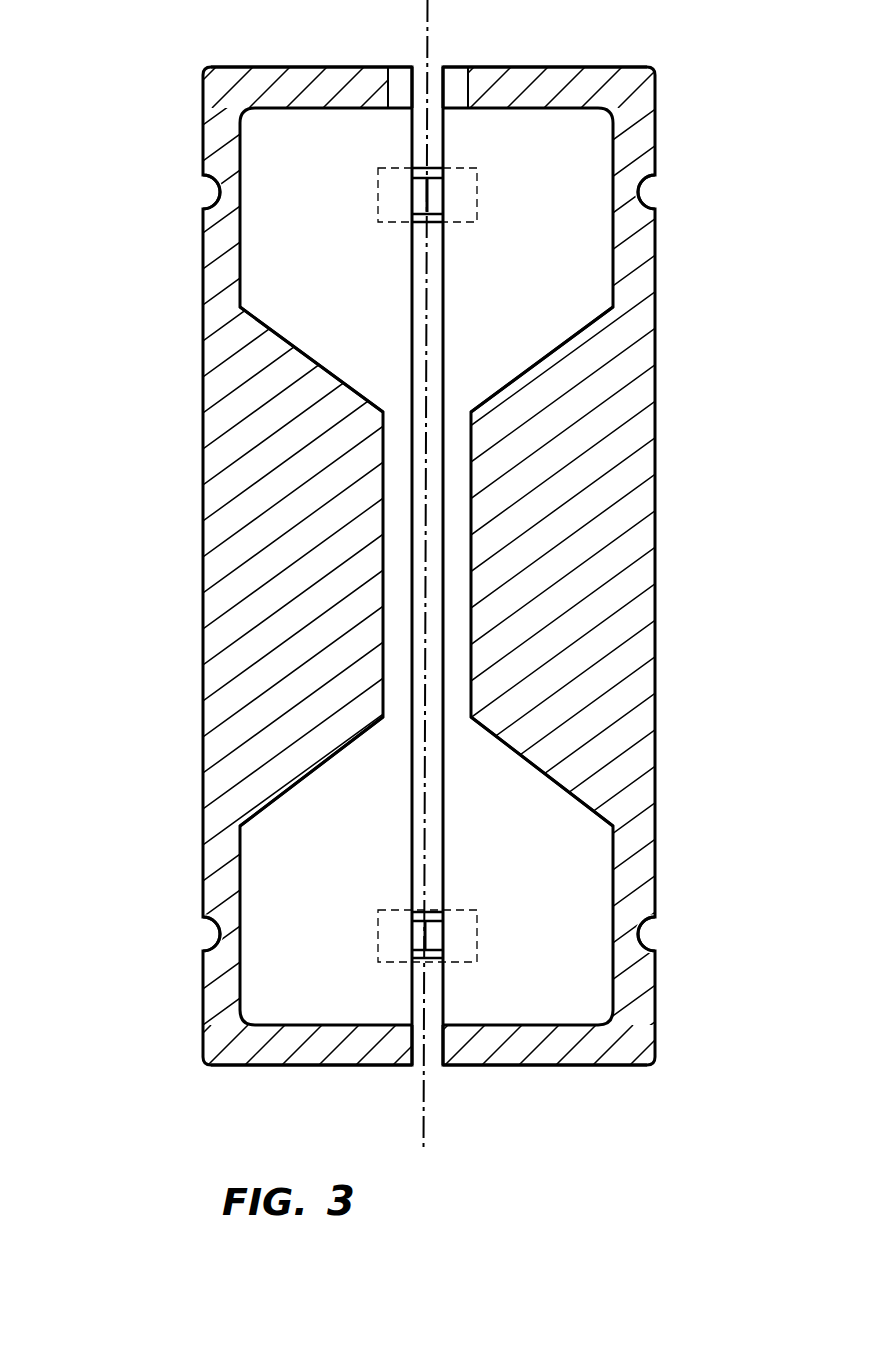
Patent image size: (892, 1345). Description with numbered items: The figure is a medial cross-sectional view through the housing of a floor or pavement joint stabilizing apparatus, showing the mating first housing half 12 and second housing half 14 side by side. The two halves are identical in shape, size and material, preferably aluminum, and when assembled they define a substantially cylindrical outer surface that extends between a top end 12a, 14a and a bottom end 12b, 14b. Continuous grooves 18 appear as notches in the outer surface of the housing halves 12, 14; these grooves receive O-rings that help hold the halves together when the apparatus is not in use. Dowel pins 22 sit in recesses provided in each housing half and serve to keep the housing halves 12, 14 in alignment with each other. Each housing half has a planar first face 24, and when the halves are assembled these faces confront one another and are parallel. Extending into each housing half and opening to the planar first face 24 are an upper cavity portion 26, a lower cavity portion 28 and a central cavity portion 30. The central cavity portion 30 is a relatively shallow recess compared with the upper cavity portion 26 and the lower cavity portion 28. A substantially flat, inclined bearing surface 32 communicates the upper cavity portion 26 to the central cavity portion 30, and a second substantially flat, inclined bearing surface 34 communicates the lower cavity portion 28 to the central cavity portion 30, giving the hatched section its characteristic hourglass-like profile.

The first housing half 12 is at (640, 565).
The top end of first housing half 12a is at (575, 67).
The bottom end of first housing half 12b is at (570, 1068).
The second housing half 14 is at (215, 530).
The top end of second housing half 14a is at (266, 67).
The bottom end of second housing half 14b is at (255, 1068).
The continuous grooves 18 is at (205, 192).
The dowel pins 22 is at (433, 195).
The planar first face 24 is at (428, 882).
The upper cavity portion 26 is at (296, 155).
The lower cavity portion 28 is at (296, 1003).
The central cavity portion 30 is at (397, 500).
The inclined bearing surface 32 is at (300, 337).
The inclined bearing surface 34 is at (296, 790).